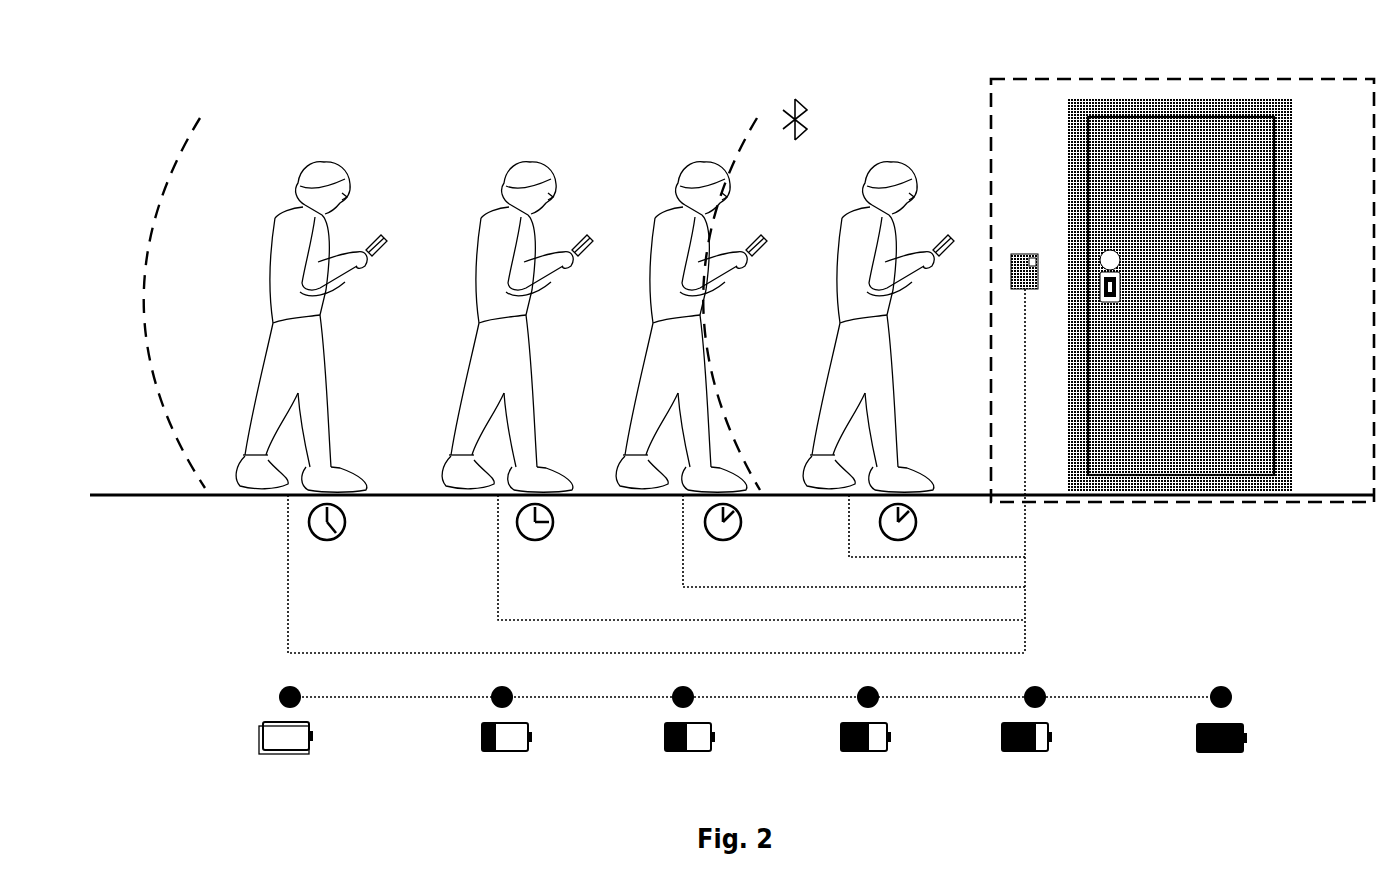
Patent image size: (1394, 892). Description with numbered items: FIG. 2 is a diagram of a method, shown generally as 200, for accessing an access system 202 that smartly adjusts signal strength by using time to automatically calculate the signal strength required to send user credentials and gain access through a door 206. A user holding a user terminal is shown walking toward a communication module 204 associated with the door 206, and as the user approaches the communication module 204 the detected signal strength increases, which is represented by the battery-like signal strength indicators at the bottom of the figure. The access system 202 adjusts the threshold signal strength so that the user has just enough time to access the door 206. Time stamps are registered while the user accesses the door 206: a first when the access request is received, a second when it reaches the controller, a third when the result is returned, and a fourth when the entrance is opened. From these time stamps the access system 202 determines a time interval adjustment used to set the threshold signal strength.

The access control environment 200 is at (662, 63).
The access system 202 is at (1190, 75).
The communication module 204 is at (1056, 243).
The door 206 is at (1290, 345).